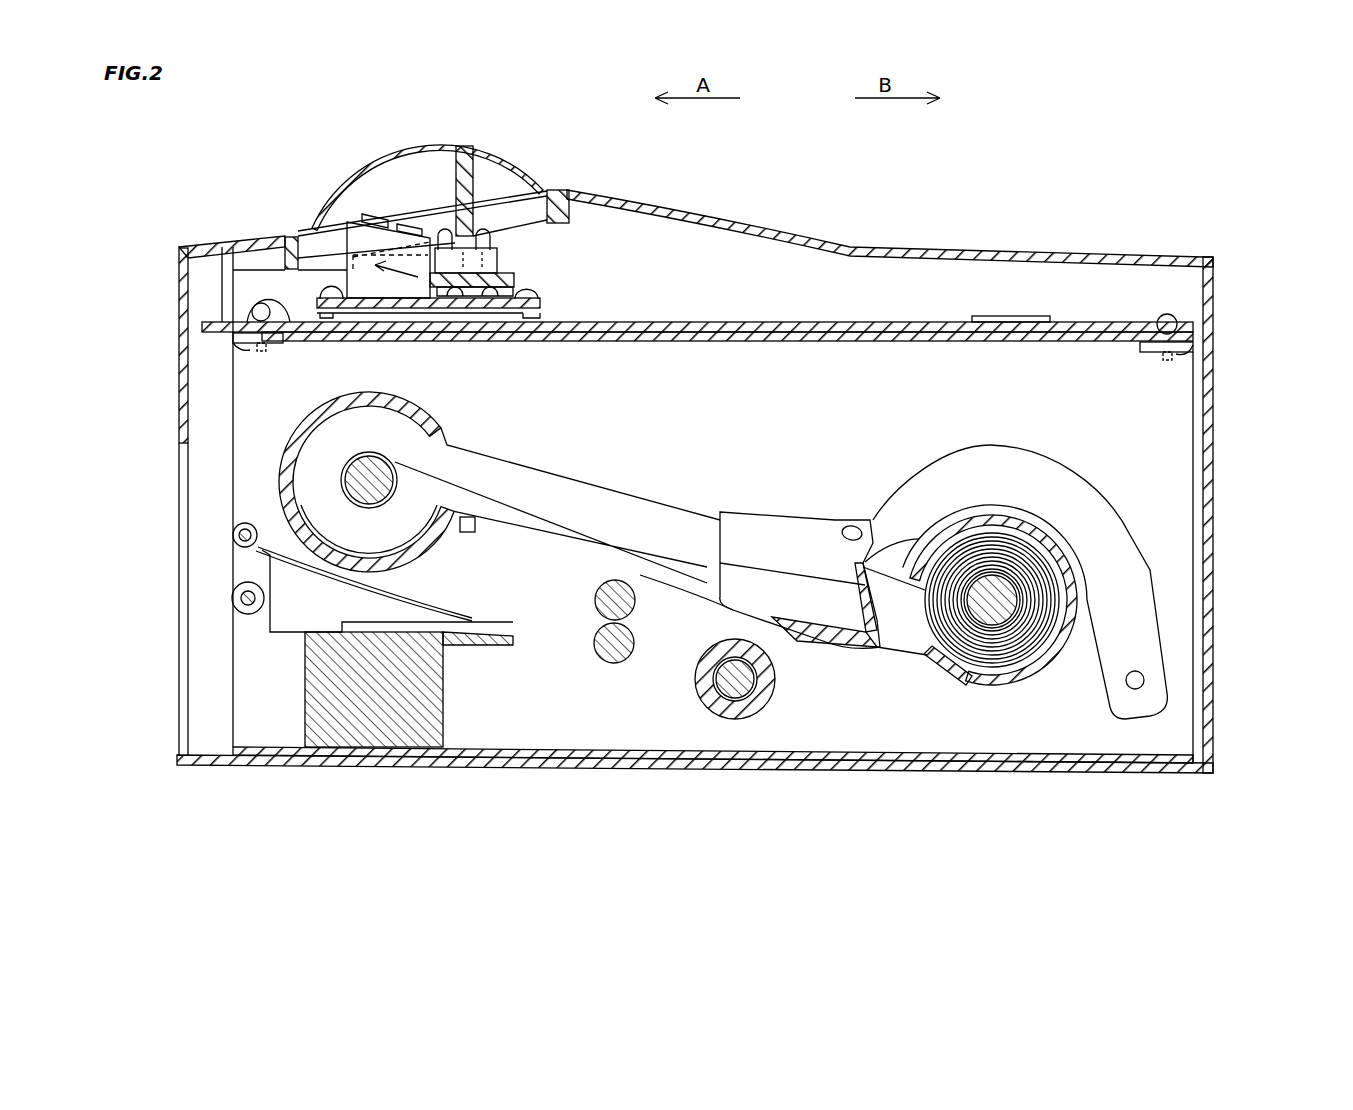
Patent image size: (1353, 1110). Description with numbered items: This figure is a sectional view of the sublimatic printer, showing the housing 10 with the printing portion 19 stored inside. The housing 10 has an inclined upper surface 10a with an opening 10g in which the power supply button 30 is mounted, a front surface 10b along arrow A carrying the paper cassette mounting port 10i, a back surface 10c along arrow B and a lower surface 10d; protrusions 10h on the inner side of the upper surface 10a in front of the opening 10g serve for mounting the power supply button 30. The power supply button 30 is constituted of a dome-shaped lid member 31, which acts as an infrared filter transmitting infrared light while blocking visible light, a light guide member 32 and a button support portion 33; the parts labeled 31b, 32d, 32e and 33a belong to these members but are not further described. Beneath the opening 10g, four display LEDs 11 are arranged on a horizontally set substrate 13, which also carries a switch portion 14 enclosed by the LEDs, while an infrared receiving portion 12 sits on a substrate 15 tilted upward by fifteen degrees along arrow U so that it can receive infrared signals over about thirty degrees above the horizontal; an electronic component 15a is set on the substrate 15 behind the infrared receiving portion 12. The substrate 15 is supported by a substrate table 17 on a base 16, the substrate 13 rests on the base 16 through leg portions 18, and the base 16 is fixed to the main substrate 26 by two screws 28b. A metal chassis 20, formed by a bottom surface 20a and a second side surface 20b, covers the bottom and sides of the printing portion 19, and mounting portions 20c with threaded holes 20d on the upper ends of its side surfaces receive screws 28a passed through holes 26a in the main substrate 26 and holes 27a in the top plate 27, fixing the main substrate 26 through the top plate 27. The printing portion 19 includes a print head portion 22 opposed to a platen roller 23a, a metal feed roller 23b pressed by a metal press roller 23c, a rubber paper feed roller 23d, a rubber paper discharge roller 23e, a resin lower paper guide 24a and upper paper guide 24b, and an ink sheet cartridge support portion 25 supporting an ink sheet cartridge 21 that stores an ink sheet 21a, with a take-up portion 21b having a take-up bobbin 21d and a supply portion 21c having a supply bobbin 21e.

The housing 10 is at (943, 256).
The upper surface 10a is at (725, 222).
The front surface 10b is at (182, 392).
The back surface 10c is at (1210, 537).
The lower surface 10d is at (740, 770).
The opening 10g is at (555, 205).
The protrusions 10h is at (197, 247).
The paper cassette mounting port 10i is at (181, 443).
The display LEDs 11 is at (447, 232).
The infrared receiving portion 12 is at (352, 243).
The substrate 13 is at (520, 265).
The switch portion 14 is at (466, 225).
The substrate 15 is at (355, 221).
The electronic component 15a is at (408, 224).
The base 16 is at (533, 305).
The substrate table 17 is at (318, 296).
The leg portions 18 is at (460, 305).
The printing portion 19 is at (725, 404).
The chassis 20 is at (850, 287).
The bottom surface 20a is at (1147, 760).
The second side surface 20b is at (1177, 487).
The mounting portions 20c is at (243, 340).
The threaded holes 20d is at (260, 353).
The ink sheet cartridge 21 is at (996, 687).
The ink sheet 21a is at (545, 530).
The take-up portion 21b is at (287, 425).
The supply portion 21c is at (1050, 667).
The take-up bobbin 21d is at (347, 462).
The supply bobbin 21e is at (988, 625).
The print head portion 22 is at (720, 610).
The platen roller 23a is at (738, 702).
The feed roller 23b is at (614, 665).
The press roller 23c is at (595, 615).
The paper feed roller 23d is at (233, 598).
The paper discharge roller 23e is at (232, 537).
The lower paper guide 24a is at (306, 717).
The upper paper guide 24b is at (303, 563).
The ink sheet cartridge support portion 25 is at (460, 523).
The main substrate 26 is at (1065, 322).
The holes 26a is at (258, 305).
The top plate 27 is at (1107, 337).
The holes 27a is at (250, 335).
The screws 28a is at (298, 320).
The screws 28b is at (331, 292).
The power supply button 30 is at (466, 95).
The lid member 31 is at (372, 162).
The cover layer end 31b is at (547, 183).
The light guide member 32 is at (400, 152).
The cover inner end 32d is at (530, 178).
The cover inner surface 32e is at (365, 185).
The button support portion 33 is at (283, 255).
The fixing bracket 33a is at (223, 298).